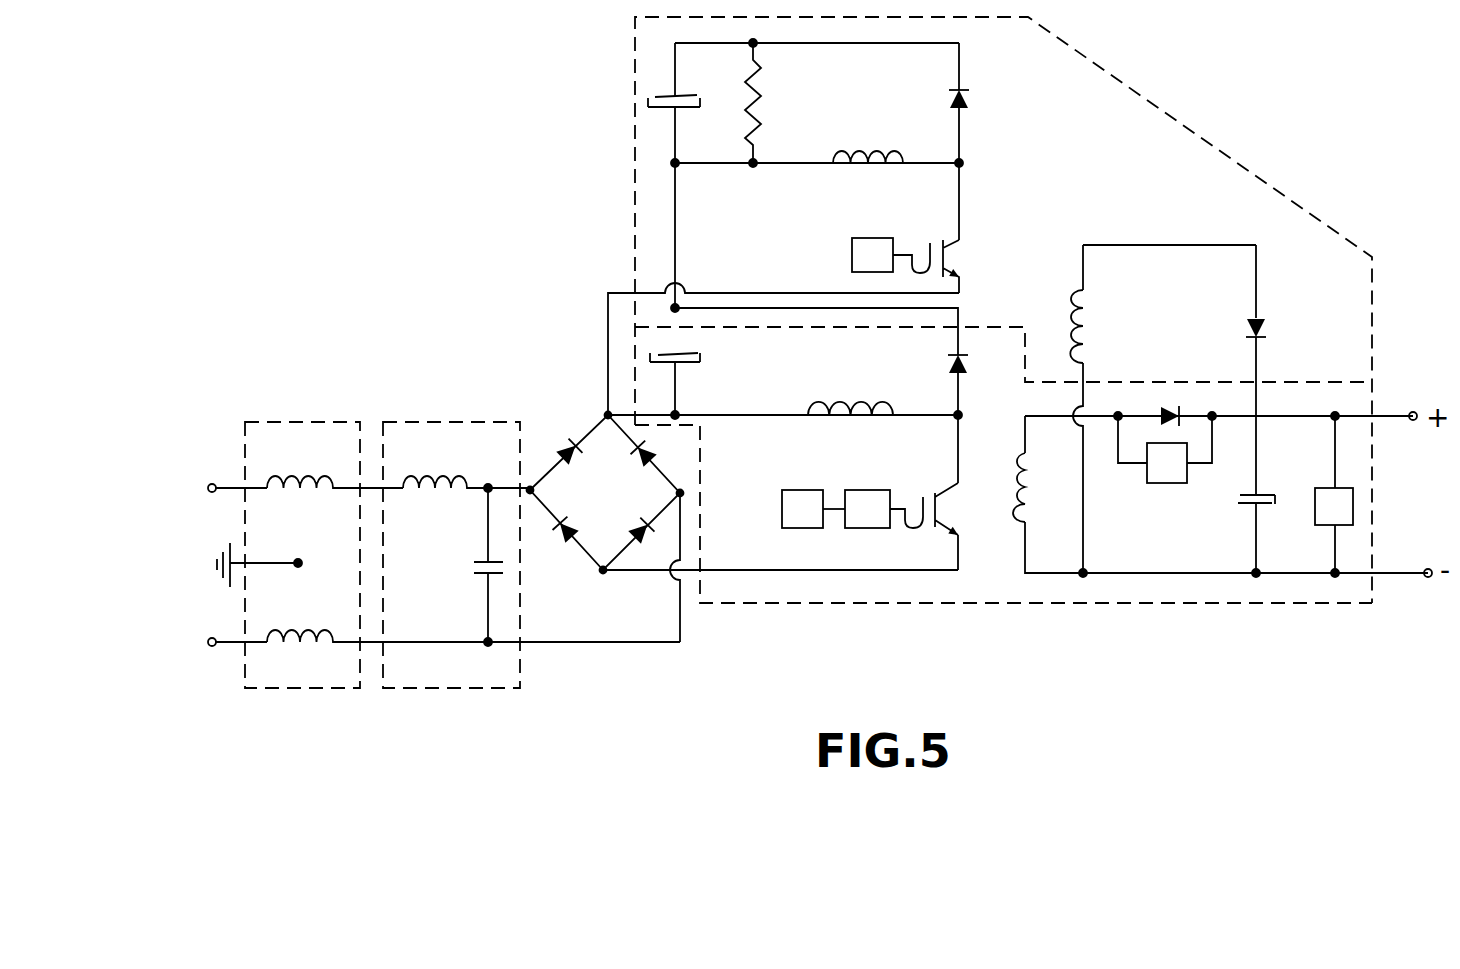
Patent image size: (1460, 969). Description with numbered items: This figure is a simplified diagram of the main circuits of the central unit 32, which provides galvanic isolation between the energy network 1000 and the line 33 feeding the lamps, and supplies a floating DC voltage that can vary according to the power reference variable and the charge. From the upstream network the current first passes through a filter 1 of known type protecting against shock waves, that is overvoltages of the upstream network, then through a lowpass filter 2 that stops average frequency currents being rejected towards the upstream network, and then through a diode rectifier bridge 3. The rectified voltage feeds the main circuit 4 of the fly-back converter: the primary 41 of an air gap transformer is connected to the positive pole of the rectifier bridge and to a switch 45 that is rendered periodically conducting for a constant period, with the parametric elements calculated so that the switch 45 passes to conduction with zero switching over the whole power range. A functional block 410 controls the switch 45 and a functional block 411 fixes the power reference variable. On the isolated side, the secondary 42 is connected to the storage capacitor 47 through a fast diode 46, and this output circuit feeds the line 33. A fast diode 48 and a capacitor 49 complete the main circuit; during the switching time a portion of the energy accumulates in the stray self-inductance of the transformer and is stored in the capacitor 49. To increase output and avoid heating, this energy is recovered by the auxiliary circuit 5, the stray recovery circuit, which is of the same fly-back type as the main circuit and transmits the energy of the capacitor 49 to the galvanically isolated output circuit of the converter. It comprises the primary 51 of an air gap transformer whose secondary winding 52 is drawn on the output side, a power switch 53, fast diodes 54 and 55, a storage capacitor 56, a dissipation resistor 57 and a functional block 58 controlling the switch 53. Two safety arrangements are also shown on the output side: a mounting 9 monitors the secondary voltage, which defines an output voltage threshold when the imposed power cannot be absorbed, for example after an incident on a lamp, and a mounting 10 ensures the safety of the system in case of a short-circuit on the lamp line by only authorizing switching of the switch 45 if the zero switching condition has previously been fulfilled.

The filter 1 is at (313, 425).
The lowpass filter 2 is at (436, 425).
The diode rectifier bridge 3 is at (566, 414).
The main circuit of the fly-back converter 4 is at (1020, 600).
The auxiliary circuit (stray recovery circuit) 5 is at (1178, 118).
The mounting 9 is at (1334, 494).
The mounting 10 is at (1165, 449).
The central unit 32 is at (454, 207).
The line 33 is at (1392, 424).
The primary of the air gap transformer 41 is at (858, 412).
The secondary 42 is at (1033, 514).
The switch 45 is at (955, 498).
The fast diode 46 is at (1165, 404).
The storage capacitor 47 is at (1242, 497).
The fast diode 48 is at (948, 360).
The capacitor 49 is at (702, 357).
The primary of the air gap transformer 51 is at (866, 142).
The winding 52 is at (1102, 330).
The power switch 53 is at (965, 252).
The fast diode 54 is at (1266, 326).
The fast diode 55 is at (968, 96).
The storage capacitor 56 is at (686, 108).
The dissipation resistor 57 is at (757, 108).
The functional block 58 is at (891, 255).
The functional block 410 is at (884, 509).
The functional block 411 is at (813, 509).
The energy network 1000 is at (211, 495).